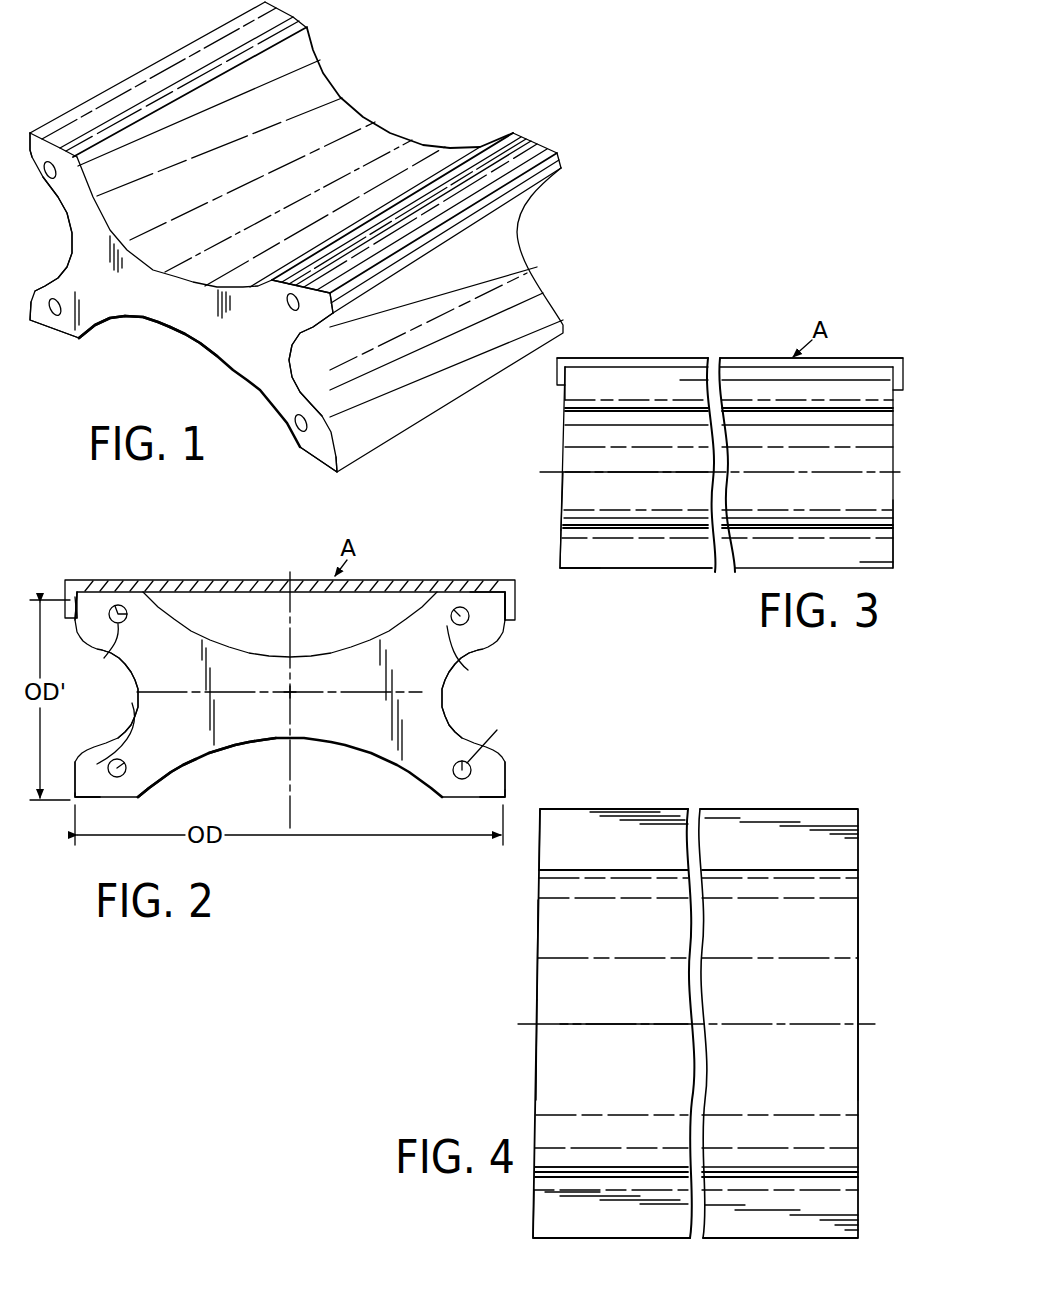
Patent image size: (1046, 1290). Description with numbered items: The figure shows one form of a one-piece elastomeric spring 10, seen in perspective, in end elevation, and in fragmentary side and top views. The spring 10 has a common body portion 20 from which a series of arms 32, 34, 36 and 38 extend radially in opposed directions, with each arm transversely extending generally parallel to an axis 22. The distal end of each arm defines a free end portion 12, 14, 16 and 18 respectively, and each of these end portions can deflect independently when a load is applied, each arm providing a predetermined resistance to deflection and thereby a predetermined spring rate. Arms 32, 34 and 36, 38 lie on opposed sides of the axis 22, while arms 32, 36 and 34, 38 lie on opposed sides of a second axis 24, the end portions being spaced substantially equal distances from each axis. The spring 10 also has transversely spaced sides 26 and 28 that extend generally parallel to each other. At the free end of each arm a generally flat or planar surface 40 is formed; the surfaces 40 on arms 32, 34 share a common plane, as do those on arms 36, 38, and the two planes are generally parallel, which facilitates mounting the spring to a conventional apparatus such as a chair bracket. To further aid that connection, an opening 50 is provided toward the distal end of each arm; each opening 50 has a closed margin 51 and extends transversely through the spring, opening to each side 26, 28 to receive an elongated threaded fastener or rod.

In FIG. 1, the elastomeric spring 10 is at (503, 113).
In FIG. 2, the elastomeric spring 10 is at (532, 716).
In FIG. 3, the elastomeric spring 10 is at (677, 350).
In FIG. 4, the elastomeric spring 10 is at (508, 1078).
In FIG. 1, the free end portion 12 is at (47, 150).
In FIG. 2, the free end portion 12 is at (105, 596).
In FIG. 4, the free end portion 12 is at (548, 848).
In FIG. 1, the free end portion 14 is at (330, 325).
In FIG. 2, the free end portion 14 is at (480, 598).
In FIG. 3, the free end portion 14 is at (575, 393).
In FIG. 4, the free end portion 14 is at (538, 1207).
In FIG. 1, the free end portion 16 is at (70, 333).
In FIG. 2, the free end portion 16 is at (102, 800).
In FIG. 3, the free end portion 16 is at (585, 558).
In FIG. 1, the free end portion 18 is at (330, 468).
In FIG. 2, the free end portion 18 is at (500, 791).
In FIG. 1, the common body portion 20 is at (194, 323).
In FIG. 2, the common body portion 20 is at (250, 723).
In FIG. 4, the common body portion 20 is at (542, 1000).
In FIG. 1, the axis 22 is at (188, 262).
In FIG. 2, the axis 22 is at (293, 622).
In FIG. 4, the axis 22 is at (637, 1026).
In FIG. 1, the axis 24 is at (266, 388).
In FIG. 2, the axis 24 is at (343, 712).
In FIG. 3, the axis 24 is at (602, 470).
In FIG. 1, the side 26 is at (157, 322).
In FIG. 3, the side 26 is at (558, 492).
In FIG. 4, the side 26 is at (540, 945).
In FIG. 1, the side 28 is at (343, 88).
In FIG. 3, the side 28 is at (890, 545).
In FIG. 4, the side 28 is at (862, 963).
In FIG. 1, the spring arm 32 is at (63, 218).
In FIG. 2, the spring arm 32 is at (153, 642).
In FIG. 1, the spring arm 34 is at (308, 232).
In FIG. 2, the spring arm 34 is at (417, 637).
In FIG. 1, the spring arm 36 is at (92, 308).
In FIG. 2, the spring arm 36 is at (153, 753).
In FIG. 1, the spring arm 38 is at (283, 408).
In FIG. 2, the spring arm 38 is at (437, 742).
In FIG. 1, the flat or planar surface 40 is at (168, 68).
In FIG. 2, the flat or planar surface 40 is at (92, 585).
In FIG. 3, the flat or planar surface 40 is at (612, 372).
In FIG. 4, the flat or planar surface 40 is at (645, 818).
In FIG. 1, the opening 50 is at (60, 167).
In FIG. 2, the opening 50 is at (130, 608).
In FIG. 2, the closed margin 51 is at (299, 694).